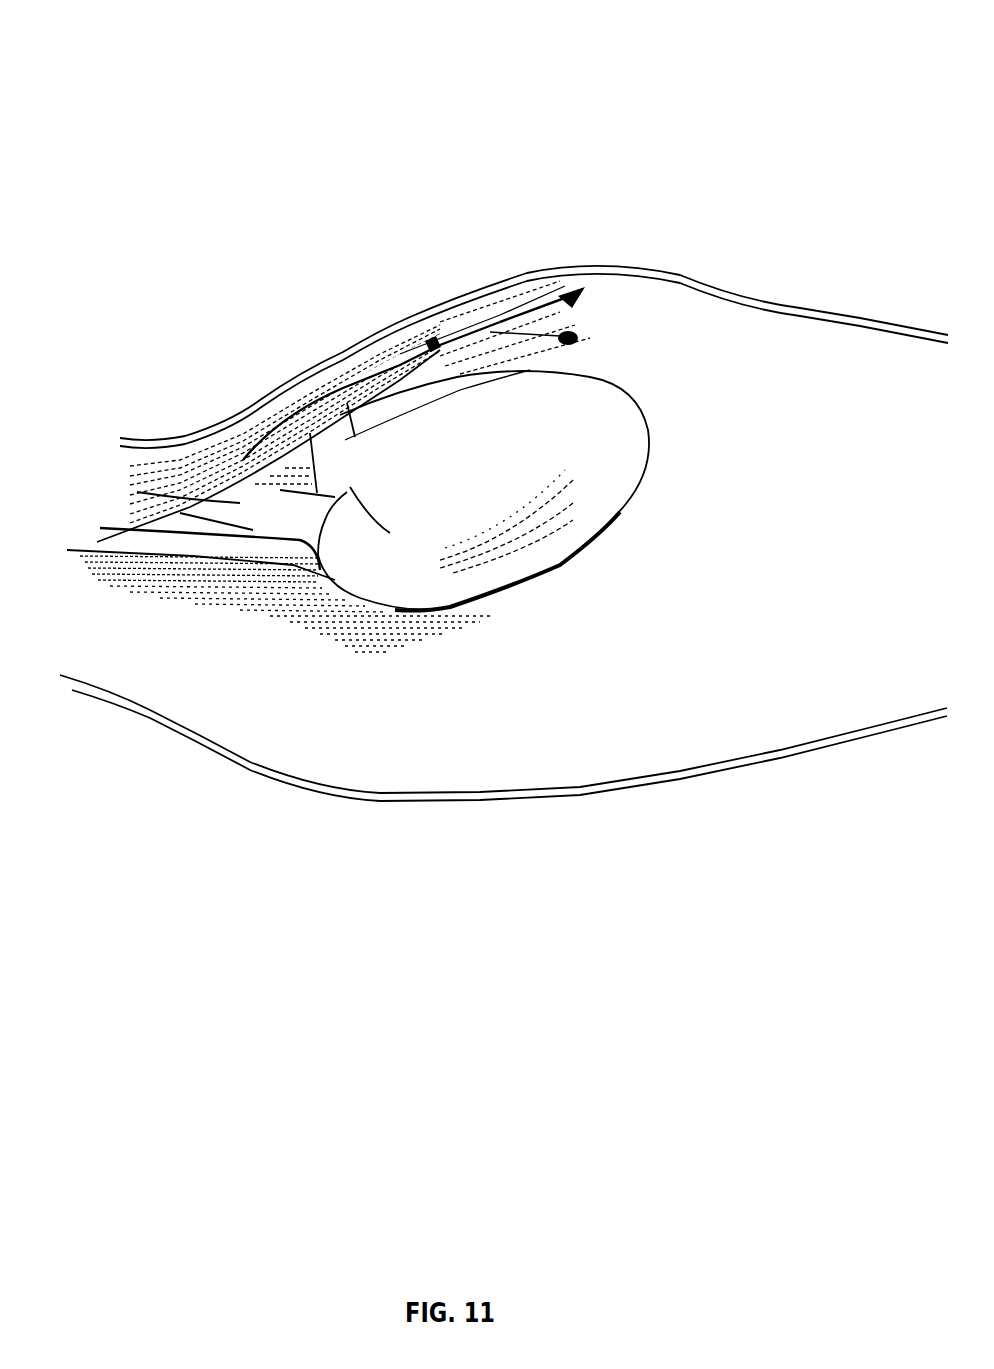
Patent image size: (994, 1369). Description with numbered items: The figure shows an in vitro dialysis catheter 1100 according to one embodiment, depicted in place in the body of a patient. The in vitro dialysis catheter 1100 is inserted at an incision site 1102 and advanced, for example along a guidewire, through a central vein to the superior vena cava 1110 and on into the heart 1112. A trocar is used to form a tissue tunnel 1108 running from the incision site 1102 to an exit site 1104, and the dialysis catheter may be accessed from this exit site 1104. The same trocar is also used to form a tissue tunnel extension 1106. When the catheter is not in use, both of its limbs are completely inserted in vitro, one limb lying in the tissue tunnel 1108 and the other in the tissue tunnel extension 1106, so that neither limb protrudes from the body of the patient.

The in vitro dialysis catheter 1100 is at (829, 72).
The incision site 1102 is at (568, 288).
The exit site 1104 is at (490, 313).
The tissue tunnel extension 1106 is at (523, 333).
The tissue tunnel 1108 is at (537, 313).
The superior vena cava 1110 is at (88, 540).
The heart 1112 is at (582, 488).